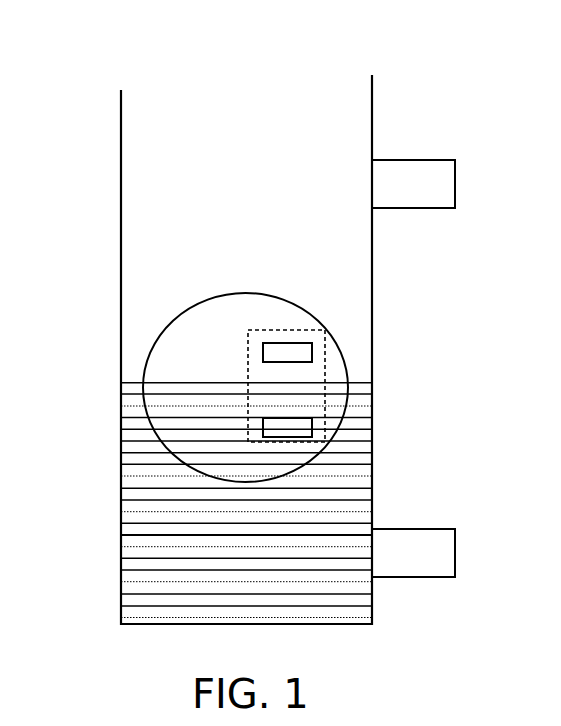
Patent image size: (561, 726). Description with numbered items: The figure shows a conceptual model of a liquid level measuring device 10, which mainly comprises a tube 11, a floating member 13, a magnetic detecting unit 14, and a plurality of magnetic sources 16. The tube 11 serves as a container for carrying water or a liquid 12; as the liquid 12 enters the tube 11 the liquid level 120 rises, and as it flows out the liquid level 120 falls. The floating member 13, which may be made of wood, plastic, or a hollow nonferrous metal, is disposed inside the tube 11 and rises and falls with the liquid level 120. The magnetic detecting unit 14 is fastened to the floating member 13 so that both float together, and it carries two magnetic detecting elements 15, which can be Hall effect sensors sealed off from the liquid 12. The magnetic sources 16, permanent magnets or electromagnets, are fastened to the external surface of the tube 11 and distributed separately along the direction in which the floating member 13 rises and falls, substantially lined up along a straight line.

The liquid level measuring device 10 is at (139, 44).
The tube 11 is at (120, 185).
The liquid 12 is at (135, 500).
The liquid level 120 is at (135, 382).
The floating member 13 is at (172, 321).
The magnetic detecting unit 14 is at (270, 332).
The magnetic detecting element 15 is at (292, 348).
The magnetic source 16 is at (408, 172).